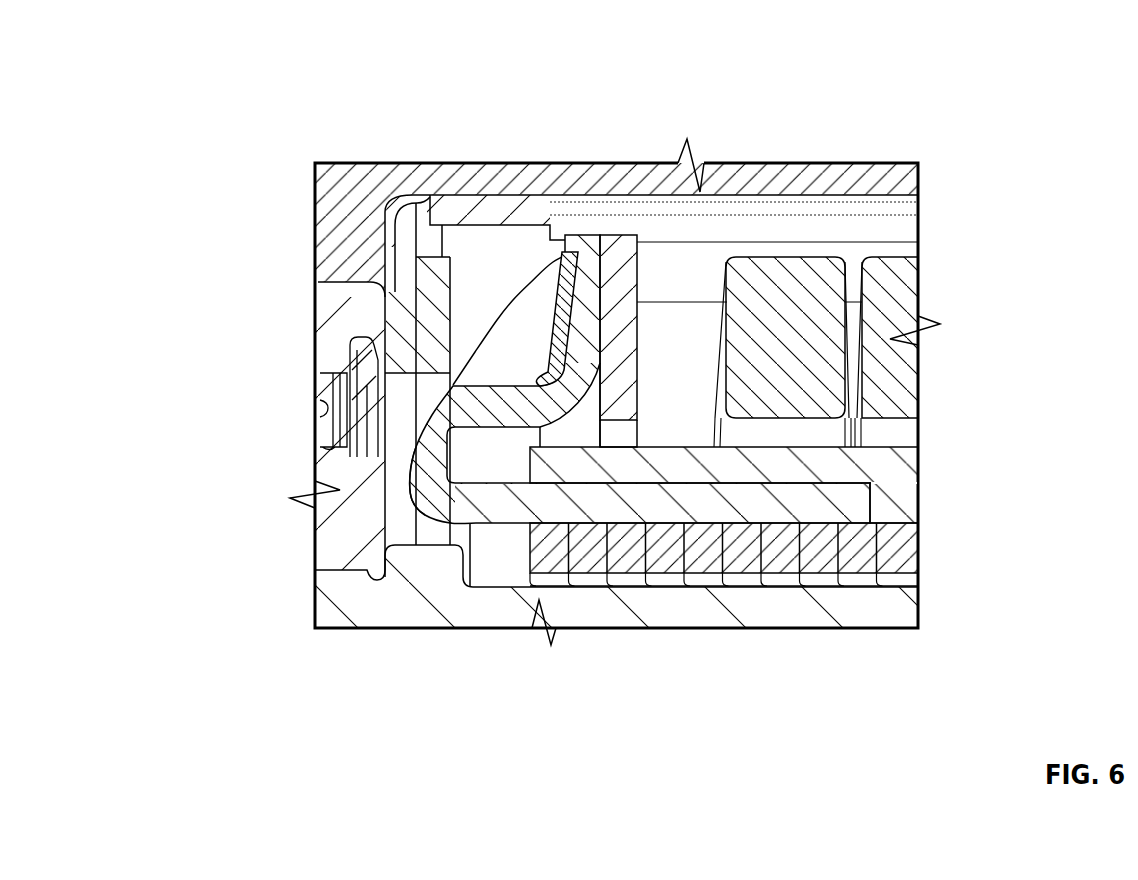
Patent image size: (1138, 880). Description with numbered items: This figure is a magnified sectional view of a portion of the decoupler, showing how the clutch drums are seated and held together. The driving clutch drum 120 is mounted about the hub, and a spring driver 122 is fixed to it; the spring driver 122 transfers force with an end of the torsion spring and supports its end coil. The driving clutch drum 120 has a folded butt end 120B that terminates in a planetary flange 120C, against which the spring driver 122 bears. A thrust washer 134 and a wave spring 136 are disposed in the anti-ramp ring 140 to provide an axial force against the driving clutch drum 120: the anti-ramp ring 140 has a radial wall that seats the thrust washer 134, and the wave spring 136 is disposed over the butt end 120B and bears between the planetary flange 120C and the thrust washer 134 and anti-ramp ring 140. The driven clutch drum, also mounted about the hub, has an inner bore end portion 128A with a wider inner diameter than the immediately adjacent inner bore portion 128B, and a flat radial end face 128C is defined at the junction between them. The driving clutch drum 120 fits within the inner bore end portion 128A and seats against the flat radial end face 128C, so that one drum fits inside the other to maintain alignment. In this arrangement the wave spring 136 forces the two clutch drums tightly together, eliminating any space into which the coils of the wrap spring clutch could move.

The driving clutch drum 120 is at (752, 505).
The folded butt end 120B is at (423, 458).
The planetary flange 120C is at (585, 253).
The spring driver 122 is at (617, 253).
The inner bore end portion 128A is at (682, 457).
The inner bore portion 128B is at (887, 465).
The flat radial end face 128C is at (868, 505).
The thrust washer 134 is at (432, 270).
The wave spring 136 is at (528, 332).
The anti-ramp ring 140 is at (453, 213).